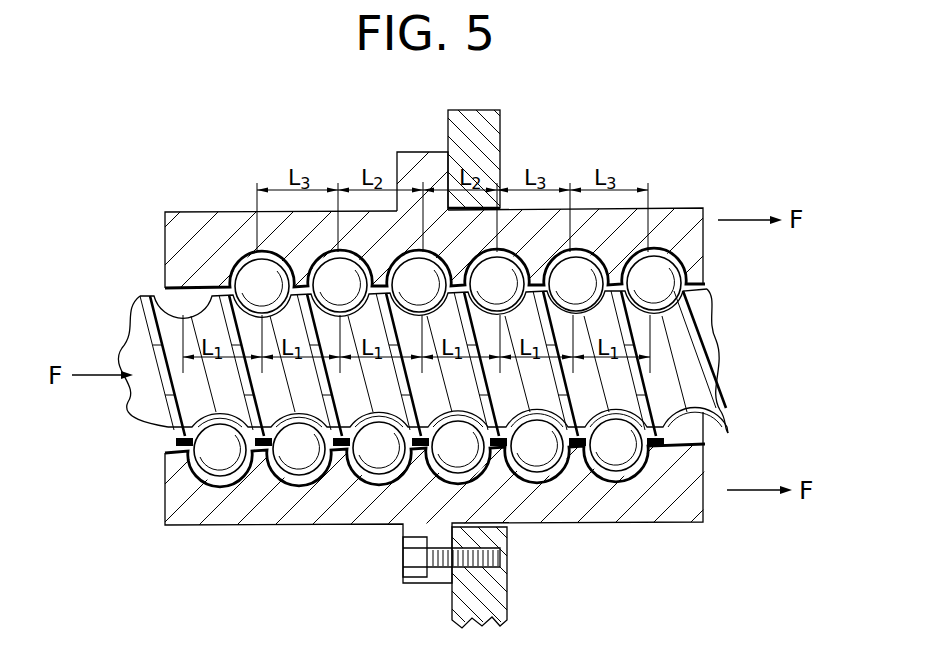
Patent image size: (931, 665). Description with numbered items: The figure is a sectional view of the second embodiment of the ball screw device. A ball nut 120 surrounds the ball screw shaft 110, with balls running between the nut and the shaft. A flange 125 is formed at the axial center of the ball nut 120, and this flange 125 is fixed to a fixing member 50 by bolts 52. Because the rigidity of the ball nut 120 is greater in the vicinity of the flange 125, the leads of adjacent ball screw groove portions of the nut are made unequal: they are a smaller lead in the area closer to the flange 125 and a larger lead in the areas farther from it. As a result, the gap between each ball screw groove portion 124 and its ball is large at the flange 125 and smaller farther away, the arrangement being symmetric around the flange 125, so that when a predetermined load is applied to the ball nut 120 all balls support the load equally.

The ball nut 120 is at (690, 194).
The ball screw groove portion 124 is at (672, 262).
The ball screw shaft 110 is at (745, 365).
The flange 125 is at (430, 162).
The fixing member 50 is at (497, 587).
The bolt 52 is at (424, 583).